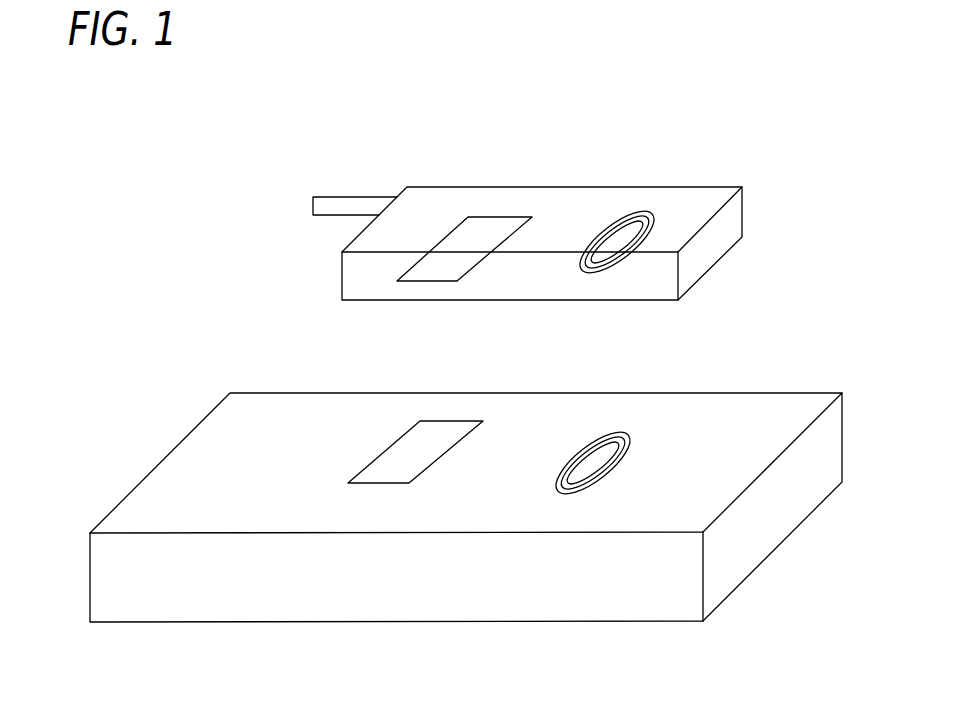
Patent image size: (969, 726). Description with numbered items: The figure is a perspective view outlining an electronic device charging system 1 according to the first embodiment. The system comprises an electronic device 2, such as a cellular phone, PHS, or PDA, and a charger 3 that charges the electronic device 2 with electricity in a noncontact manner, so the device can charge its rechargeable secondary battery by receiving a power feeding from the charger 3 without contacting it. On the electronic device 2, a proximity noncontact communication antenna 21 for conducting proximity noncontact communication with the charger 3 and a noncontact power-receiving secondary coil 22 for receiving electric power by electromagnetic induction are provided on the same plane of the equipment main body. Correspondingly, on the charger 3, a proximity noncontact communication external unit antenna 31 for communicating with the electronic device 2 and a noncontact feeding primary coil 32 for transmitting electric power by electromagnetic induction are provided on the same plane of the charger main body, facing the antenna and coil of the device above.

The electronic device charging system 1 is at (798, 258).
The electronic device 2 is at (705, 187).
The proximity noncontact communication antenna 21 is at (498, 220).
The noncontact power-receiving secondary coil 22 is at (632, 210).
The charger 3 is at (792, 392).
The proximity noncontact communication external unit antenna 31 is at (458, 423).
The noncontact feeding primary coil 32 is at (612, 432).